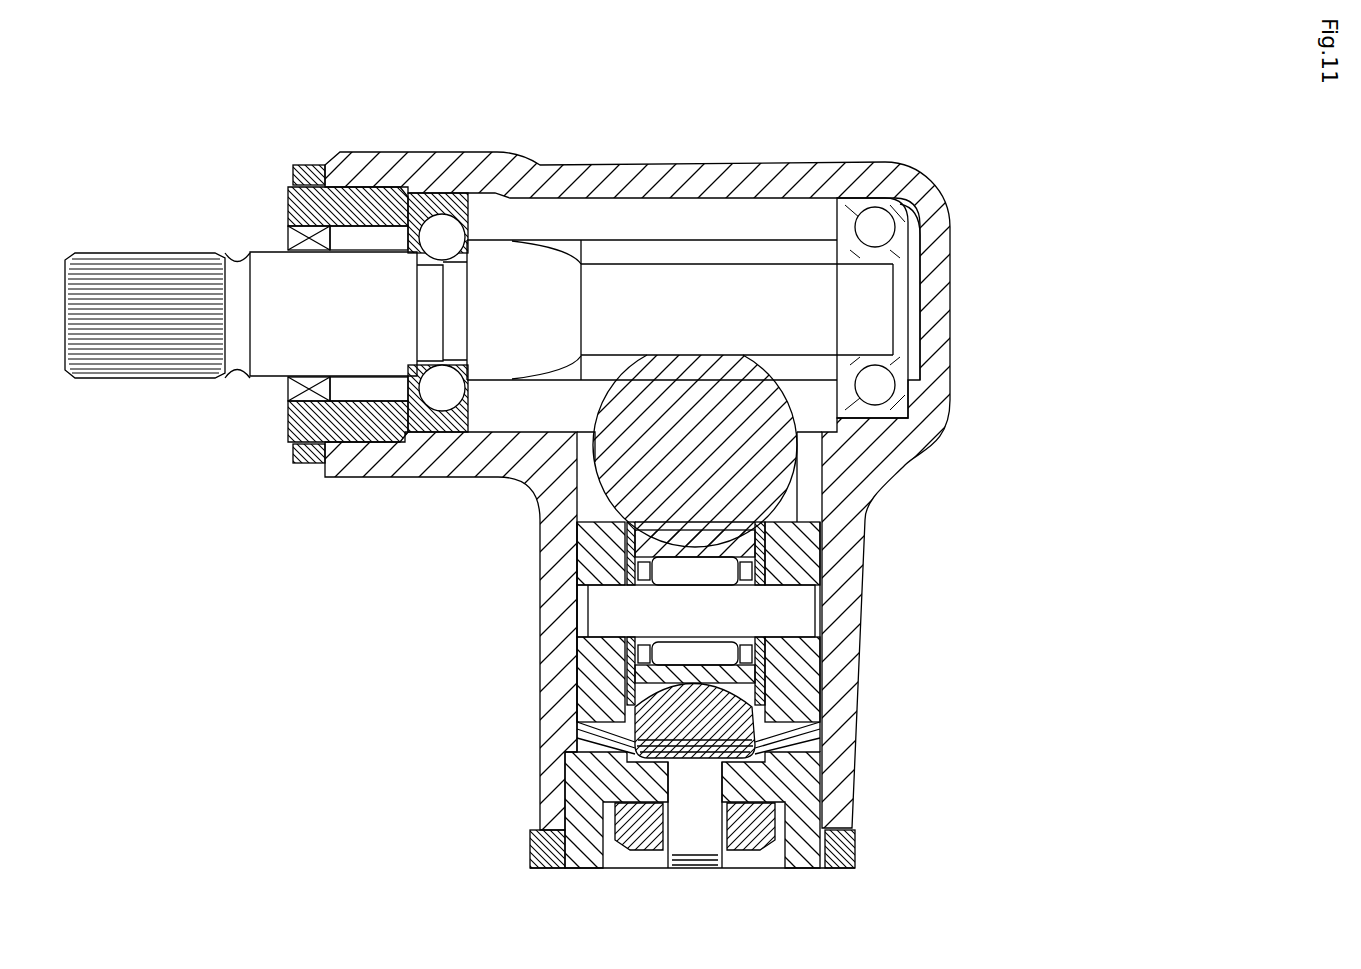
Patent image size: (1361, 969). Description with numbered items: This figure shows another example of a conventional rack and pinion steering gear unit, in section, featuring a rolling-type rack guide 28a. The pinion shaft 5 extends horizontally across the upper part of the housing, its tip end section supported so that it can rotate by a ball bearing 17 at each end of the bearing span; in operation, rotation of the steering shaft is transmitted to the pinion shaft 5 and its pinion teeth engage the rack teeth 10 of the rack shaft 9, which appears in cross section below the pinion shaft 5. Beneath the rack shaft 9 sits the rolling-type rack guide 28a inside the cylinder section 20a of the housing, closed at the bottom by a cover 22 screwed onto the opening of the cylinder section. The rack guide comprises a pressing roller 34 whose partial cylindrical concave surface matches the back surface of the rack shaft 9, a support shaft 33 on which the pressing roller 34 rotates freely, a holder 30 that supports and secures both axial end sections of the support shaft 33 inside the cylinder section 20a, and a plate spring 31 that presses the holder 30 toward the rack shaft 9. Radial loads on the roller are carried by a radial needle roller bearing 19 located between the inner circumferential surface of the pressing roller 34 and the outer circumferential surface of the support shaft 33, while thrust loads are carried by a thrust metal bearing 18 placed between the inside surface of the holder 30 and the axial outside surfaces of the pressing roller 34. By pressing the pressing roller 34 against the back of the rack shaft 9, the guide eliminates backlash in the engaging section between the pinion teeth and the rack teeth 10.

The pinion shaft 5 is at (283, 277).
The ball bearing 17 is at (443, 229).
The rack teeth 10 is at (750, 372).
The rack shaft 9 is at (773, 467).
The thrust metal bearing 18 is at (628, 550).
The pressing roller 34 is at (740, 546).
The support shaft 33 is at (787, 622).
The holder 30 is at (602, 676).
The radial needle roller bearing 19 is at (750, 684).
The plate spring 31 is at (592, 740).
The rolling-type rack guide 28a is at (418, 726).
The cylinder section 20a is at (546, 800).
The cover 22 is at (888, 800).